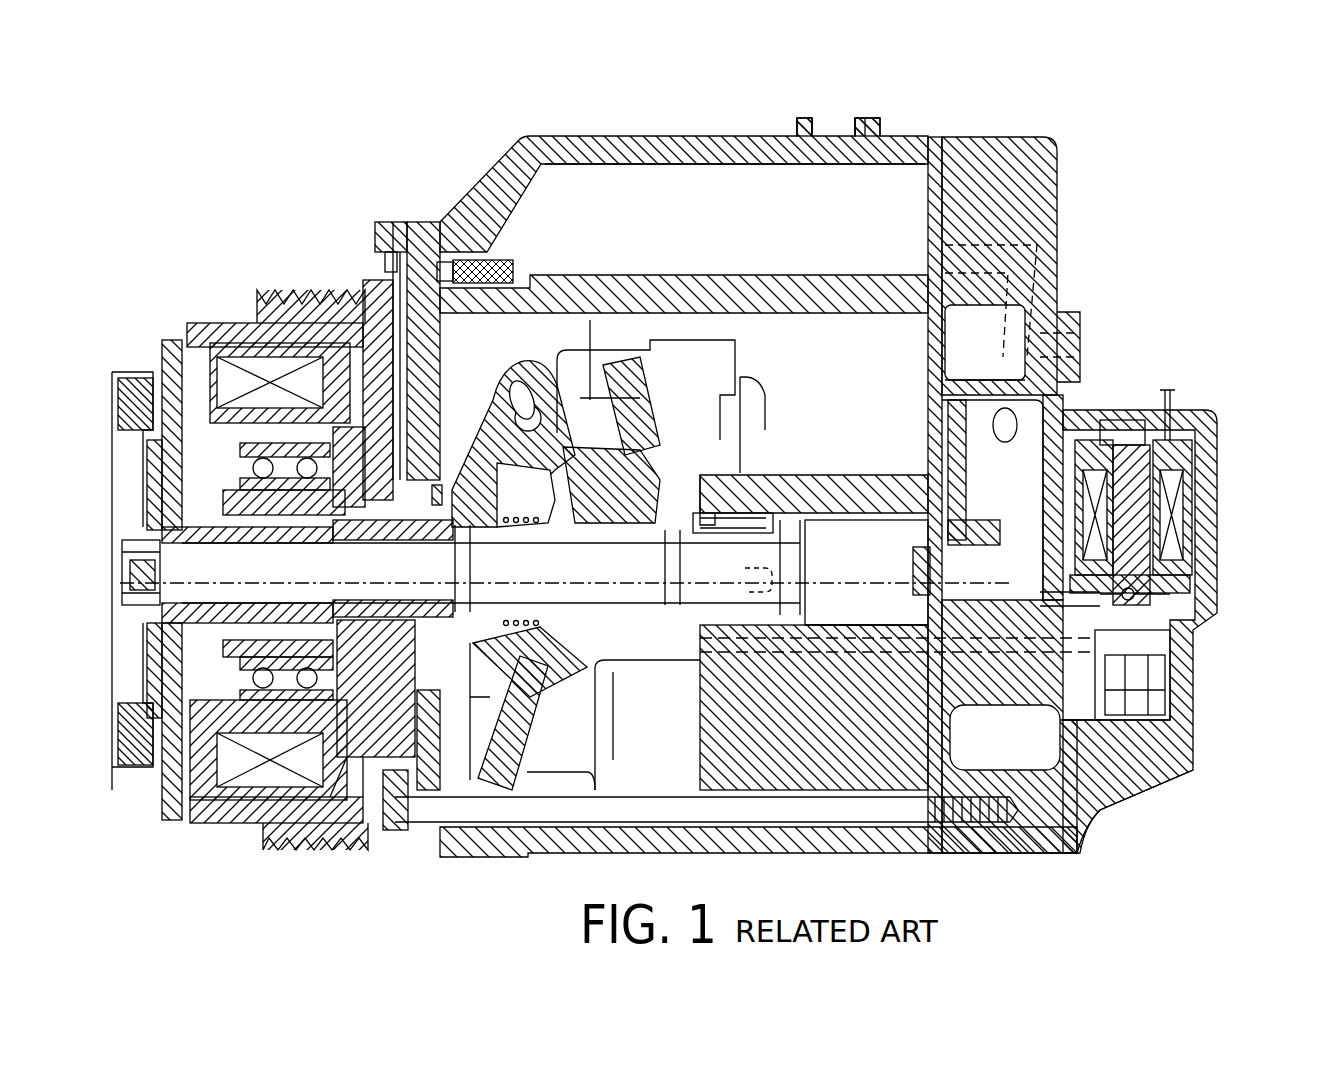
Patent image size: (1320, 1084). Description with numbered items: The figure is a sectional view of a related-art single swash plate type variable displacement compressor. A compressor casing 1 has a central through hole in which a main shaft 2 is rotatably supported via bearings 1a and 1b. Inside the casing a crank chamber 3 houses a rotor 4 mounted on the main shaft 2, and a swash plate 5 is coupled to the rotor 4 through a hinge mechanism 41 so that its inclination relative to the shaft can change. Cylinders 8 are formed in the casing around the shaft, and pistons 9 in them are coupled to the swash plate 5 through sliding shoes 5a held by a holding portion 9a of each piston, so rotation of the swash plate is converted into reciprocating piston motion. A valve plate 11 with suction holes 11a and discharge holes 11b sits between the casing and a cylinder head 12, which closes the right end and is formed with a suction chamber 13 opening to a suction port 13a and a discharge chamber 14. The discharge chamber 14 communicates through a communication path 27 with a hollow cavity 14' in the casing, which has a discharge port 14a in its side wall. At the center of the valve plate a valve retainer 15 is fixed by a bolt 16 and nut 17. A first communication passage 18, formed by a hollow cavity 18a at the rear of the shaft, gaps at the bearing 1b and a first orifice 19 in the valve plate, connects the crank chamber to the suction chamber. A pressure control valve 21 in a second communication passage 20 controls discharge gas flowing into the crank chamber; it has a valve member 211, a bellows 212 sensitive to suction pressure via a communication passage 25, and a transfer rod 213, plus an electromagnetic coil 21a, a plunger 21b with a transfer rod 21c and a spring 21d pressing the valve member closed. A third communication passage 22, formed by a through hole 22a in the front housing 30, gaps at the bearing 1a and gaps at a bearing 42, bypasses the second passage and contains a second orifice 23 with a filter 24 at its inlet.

The compressor casing 1 is at (455, 212).
The bearing 1a is at (380, 540).
The bearing 1b is at (725, 533).
The main shaft 2 is at (625, 590).
The crank chamber 3 is at (654, 650).
The rotor 4 is at (470, 462).
The swash plate 5 is at (572, 472).
The sliding shoes 5a is at (652, 438).
The cylinders 8 is at (880, 322).
The pistons 9 is at (775, 335).
The holding portion 9a is at (653, 380).
The valve plate 11 is at (935, 137).
The suction holes 11a is at (985, 360).
The discharge holes 11b is at (968, 433).
The cylinder head 12 is at (1040, 136).
The suction chamber 13 is at (958, 336).
The suction port 13a is at (1070, 350).
The discharge chamber 14 is at (992, 500).
The hollow cavity 14' is at (735, 195).
The discharge port 14a is at (840, 136).
The valve retainer 15 is at (966, 500).
The bolt 16 is at (910, 566).
The nut 17 is at (1000, 530).
The first communication passage 18 is at (840, 597).
The hollow cavity 18a is at (853, 623).
The first orifice 19 is at (878, 797).
The second communication passage 20 is at (1060, 598).
The pressure control valve 21 is at (1150, 733).
The electromagnetic coil 21a is at (1170, 530).
The plunger 21b is at (1150, 440).
The transfer rod 21c is at (1175, 572).
The spring 21d is at (1128, 440).
The third communication passage 22 is at (385, 240).
The through hole 22a is at (392, 268).
The second orifice 23 is at (420, 222).
The filter 24 is at (518, 272).
The communication passage 25 is at (1080, 735).
The communication path 27 is at (1022, 322).
The front housing 30 is at (377, 327).
The hinge mechanism 41 is at (520, 382).
The bearing 42 is at (437, 485).
The valve member 211 is at (1180, 592).
The bellows 212 is at (1170, 680).
The transfer rod 213 is at (1190, 637).